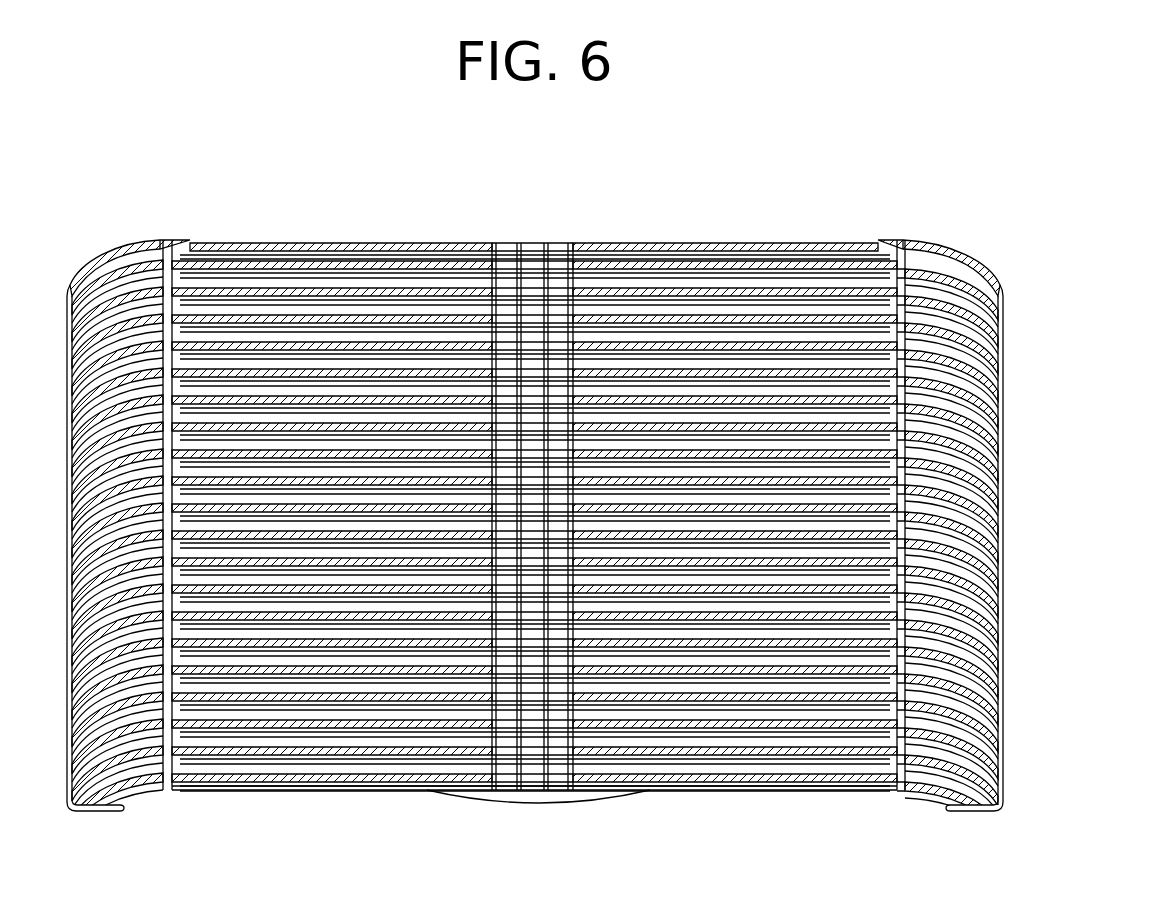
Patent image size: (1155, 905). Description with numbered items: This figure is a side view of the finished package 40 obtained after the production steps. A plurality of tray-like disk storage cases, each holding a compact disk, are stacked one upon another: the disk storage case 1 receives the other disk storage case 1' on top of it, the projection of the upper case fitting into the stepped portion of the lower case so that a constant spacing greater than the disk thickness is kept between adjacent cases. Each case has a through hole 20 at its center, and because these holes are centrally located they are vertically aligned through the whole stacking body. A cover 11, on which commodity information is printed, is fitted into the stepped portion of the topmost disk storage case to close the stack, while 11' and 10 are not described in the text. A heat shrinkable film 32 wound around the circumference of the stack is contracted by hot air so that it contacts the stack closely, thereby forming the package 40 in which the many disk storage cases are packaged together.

The disk storage case 1 is at (943, 817).
The other disk storage case 1' is at (997, 788).
The cell plate 10 is at (702, 285).
The cover 11 is at (545, 230).
The end plate 11' is at (534, 203).
The through hole 20 is at (537, 250).
The heat shrinkable film 32 is at (1008, 492).
The package 40 is at (611, 548).